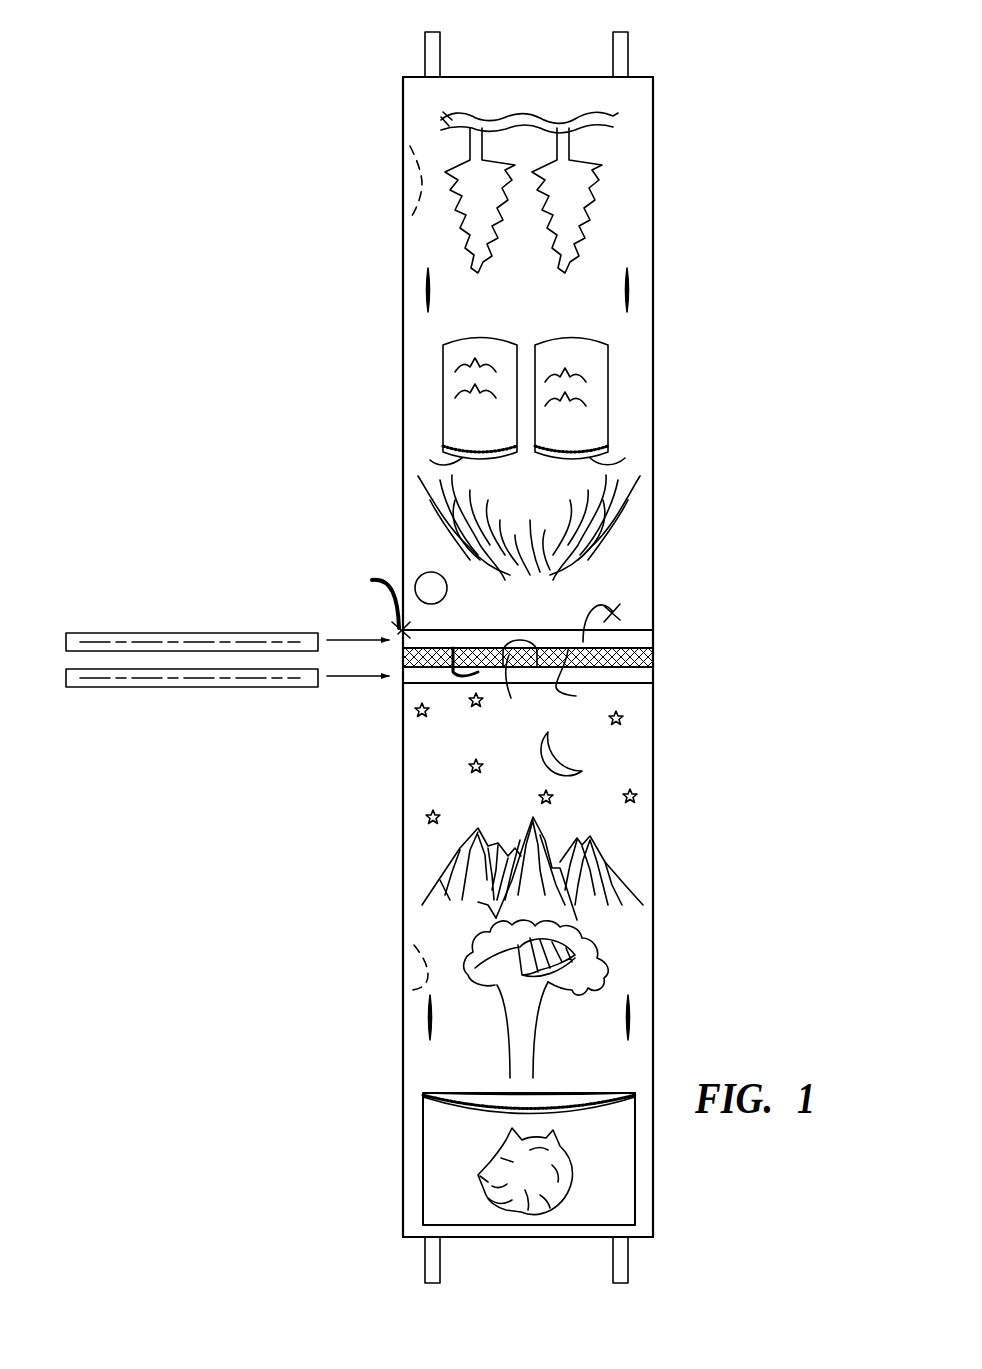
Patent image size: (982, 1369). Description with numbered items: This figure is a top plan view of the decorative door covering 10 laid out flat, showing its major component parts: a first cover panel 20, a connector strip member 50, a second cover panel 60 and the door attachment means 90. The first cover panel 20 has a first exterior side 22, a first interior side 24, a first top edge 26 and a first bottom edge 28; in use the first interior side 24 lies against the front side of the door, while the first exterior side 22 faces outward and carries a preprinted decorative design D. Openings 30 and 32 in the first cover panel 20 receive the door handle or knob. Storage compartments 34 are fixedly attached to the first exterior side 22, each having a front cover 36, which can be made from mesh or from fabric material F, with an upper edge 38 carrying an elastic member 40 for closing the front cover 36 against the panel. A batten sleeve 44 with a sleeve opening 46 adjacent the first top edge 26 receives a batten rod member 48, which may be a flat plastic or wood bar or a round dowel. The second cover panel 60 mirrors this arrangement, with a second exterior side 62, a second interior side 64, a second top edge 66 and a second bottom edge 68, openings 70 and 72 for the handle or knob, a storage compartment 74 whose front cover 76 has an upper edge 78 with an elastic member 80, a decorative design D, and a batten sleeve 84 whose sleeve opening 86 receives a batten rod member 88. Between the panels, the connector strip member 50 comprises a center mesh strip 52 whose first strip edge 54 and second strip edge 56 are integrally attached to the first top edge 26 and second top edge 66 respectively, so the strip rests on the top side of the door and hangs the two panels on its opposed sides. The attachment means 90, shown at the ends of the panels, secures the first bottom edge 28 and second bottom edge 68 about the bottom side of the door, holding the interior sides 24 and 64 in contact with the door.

The decorative door covering 10 is at (346, 322).
The first cover panel 20 is at (658, 356).
The first exterior side 22 is at (623, 161).
The first interior side 24 is at (413, 217).
The first top edge 26 is at (484, 648).
The first bottom edge 28 is at (513, 77).
The opening 30 is at (436, 298).
The opening 32 is at (636, 284).
The storage compartment 34 is at (445, 395).
The front cover 36 is at (565, 350).
The upper edge 38 is at (470, 449).
The elastic member 40 is at (459, 448).
The batten sleeve 44 is at (640, 636).
The sleeve opening 46 is at (376, 604).
The batten rod member 48 is at (118, 640).
The connector strip member 50 is at (656, 659).
The center mesh strip 52 is at (580, 648).
The first strip edge 54 is at (615, 612).
The second strip edge 56 is at (580, 680).
The second cover panel 60 is at (660, 862).
The second exterior side 62 is at (622, 963).
The second interior side 64 is at (412, 985).
The second top edge 66 is at (514, 687).
The second bottom edge 68 is at (536, 1238).
The opening 70 is at (434, 1032).
The opening 72 is at (622, 1028).
The storage compartment 74 is at (447, 1150).
The front cover 76 is at (445, 1205).
The upper edge 78 is at (566, 1112).
The elastic member 80 is at (590, 1093).
The batten sleeve 84 is at (650, 678).
The sleeve opening 86 is at (401, 684).
The batten rod member 88 is at (118, 680).
The first attachment means 90 is at (459, 49).
The preprinted decorative design D is at (617, 500).
The fabric material F is at (596, 396).